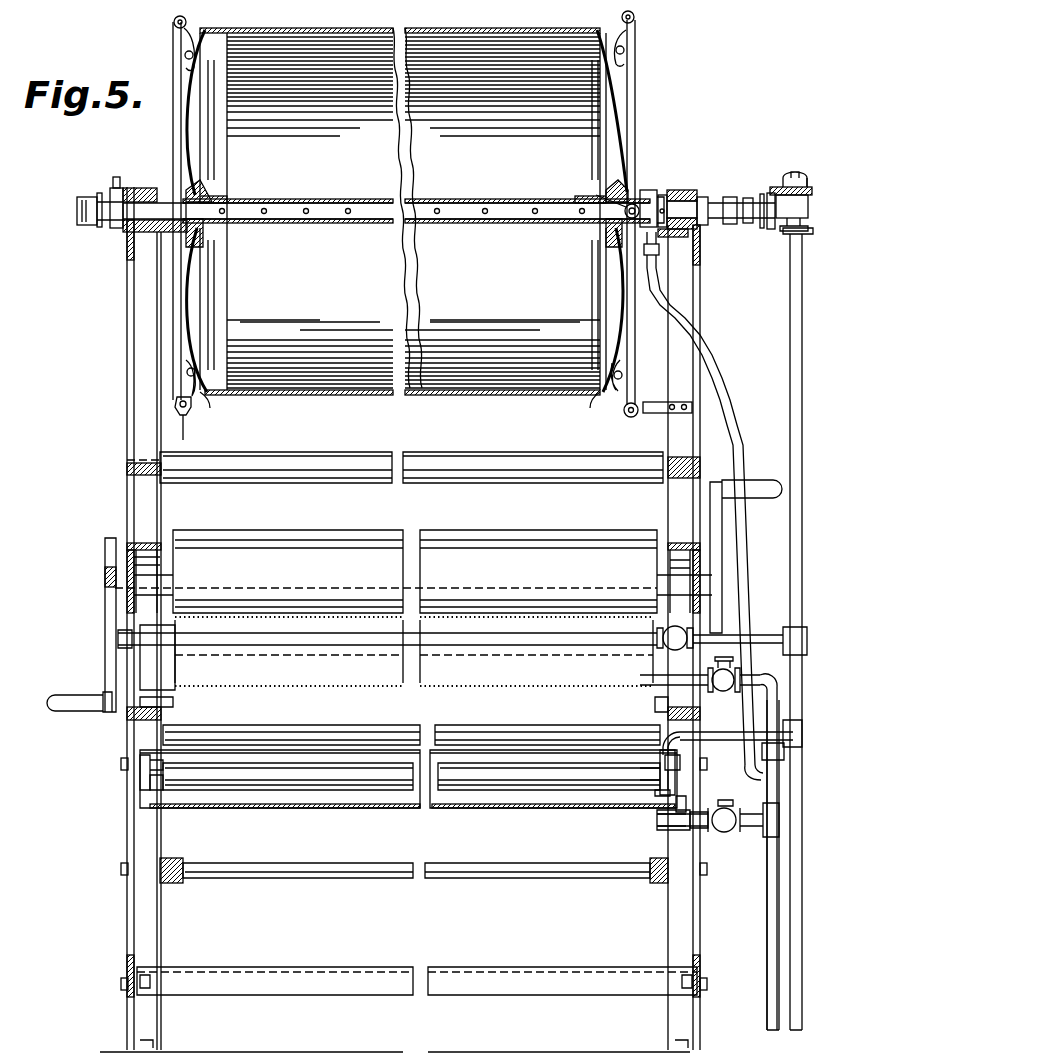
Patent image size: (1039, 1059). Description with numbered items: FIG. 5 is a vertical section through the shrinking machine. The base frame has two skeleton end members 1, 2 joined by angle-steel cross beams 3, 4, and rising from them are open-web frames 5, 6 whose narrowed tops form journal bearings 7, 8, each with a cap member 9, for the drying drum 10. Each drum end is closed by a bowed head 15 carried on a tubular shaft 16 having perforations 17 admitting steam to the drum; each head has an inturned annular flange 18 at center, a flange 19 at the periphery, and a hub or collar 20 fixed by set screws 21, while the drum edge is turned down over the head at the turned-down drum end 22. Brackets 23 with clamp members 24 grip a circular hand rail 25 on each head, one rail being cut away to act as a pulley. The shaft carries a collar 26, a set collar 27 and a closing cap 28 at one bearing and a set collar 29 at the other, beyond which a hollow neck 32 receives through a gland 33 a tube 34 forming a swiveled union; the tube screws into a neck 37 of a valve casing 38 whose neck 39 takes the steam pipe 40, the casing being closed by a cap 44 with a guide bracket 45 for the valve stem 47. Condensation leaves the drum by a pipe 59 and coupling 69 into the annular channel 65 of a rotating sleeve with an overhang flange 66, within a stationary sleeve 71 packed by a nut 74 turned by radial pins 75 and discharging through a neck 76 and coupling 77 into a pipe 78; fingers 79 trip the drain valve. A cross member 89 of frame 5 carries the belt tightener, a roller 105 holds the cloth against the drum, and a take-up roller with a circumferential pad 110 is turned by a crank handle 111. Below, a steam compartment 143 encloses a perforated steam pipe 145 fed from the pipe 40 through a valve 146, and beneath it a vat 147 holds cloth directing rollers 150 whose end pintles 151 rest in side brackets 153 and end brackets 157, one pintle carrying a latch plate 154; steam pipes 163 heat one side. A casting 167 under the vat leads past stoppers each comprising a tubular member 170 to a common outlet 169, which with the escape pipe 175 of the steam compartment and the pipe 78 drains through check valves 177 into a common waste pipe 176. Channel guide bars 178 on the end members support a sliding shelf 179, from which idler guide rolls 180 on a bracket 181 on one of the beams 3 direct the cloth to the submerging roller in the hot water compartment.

The end member 1 is at (150, 922).
The end member 2 is at (668, 913).
The cross beam 3 is at (290, 750).
The cross beam 4 is at (268, 968).
The frame 5 is at (127, 317).
The frame 6 is at (690, 318).
The journal bearing 7 is at (130, 237).
The journal bearing 8 is at (686, 236).
The cap member 9 is at (138, 186).
The drying drum 10 is at (400, 211).
The head 15 is at (181, 124).
The shaft 16 is at (438, 190).
The perforations 17 is at (482, 216).
The inturned annular flange 18 is at (213, 200).
The flange 19 is at (232, 372).
The hub or collar 20 is at (190, 196).
The set screw 21 is at (205, 248).
The turned-down drum end 22 is at (212, 398).
The bracket 23 is at (183, 52).
The clamp member 24 is at (173, 32).
The hand rail 25 is at (172, 352).
The collar 26 is at (168, 236).
The set collar 27 is at (105, 227).
The cap 28 is at (77, 214).
The set collar 29 is at (705, 200).
The hollow neck 32 is at (733, 188).
The gland 33 is at (747, 228).
The tube 34 is at (768, 228).
The neck 37 is at (765, 195).
The valve casing 38 is at (792, 213).
The neck 39 is at (789, 236).
The steam pipe 40 is at (790, 338).
The cap 44 is at (775, 188).
The guide bracket 45 is at (807, 186).
The valve stem 47 is at (795, 172).
The pipe 59 is at (638, 203).
The annular channel 65 is at (618, 262).
The overhang flange 66 is at (647, 190).
The coupling 69 is at (600, 190).
The sleeve 71 is at (660, 192).
The nut 74 is at (680, 192).
The radial pin 75 is at (670, 193).
The neck 76 is at (658, 246).
The coupling 77 is at (658, 268).
The pipe 78 is at (735, 382).
The finger 79 is at (657, 413).
The cross member 89 is at (127, 465).
The roller 105 is at (490, 480).
The circumferential pad 110 is at (413, 571).
The crank handle 111 is at (108, 678).
The steam compartment 143 is at (408, 724).
The perforated steam pipe 145 is at (360, 640).
The valve 146 is at (665, 628).
The vat 147 is at (468, 796).
The cloth directing roller 150 is at (375, 778).
The end pintle 151 is at (158, 780).
The bracket 153 is at (147, 762).
The latch plate 154 is at (650, 790).
The bracket 157 is at (690, 770).
The steam pipe 163 is at (695, 742).
The casting 167 is at (660, 830).
The common outlet 169 is at (690, 826).
The tubular member 170 is at (678, 800).
The escape pipe 175 is at (653, 676).
The common waste pipe 176 is at (768, 957).
The check valve 177 is at (720, 692).
The channel guide bar 178 is at (178, 884).
The shelf 179 is at (350, 878).
The idler guide roll 180 is at (362, 718).
The bracket 181 is at (173, 708).